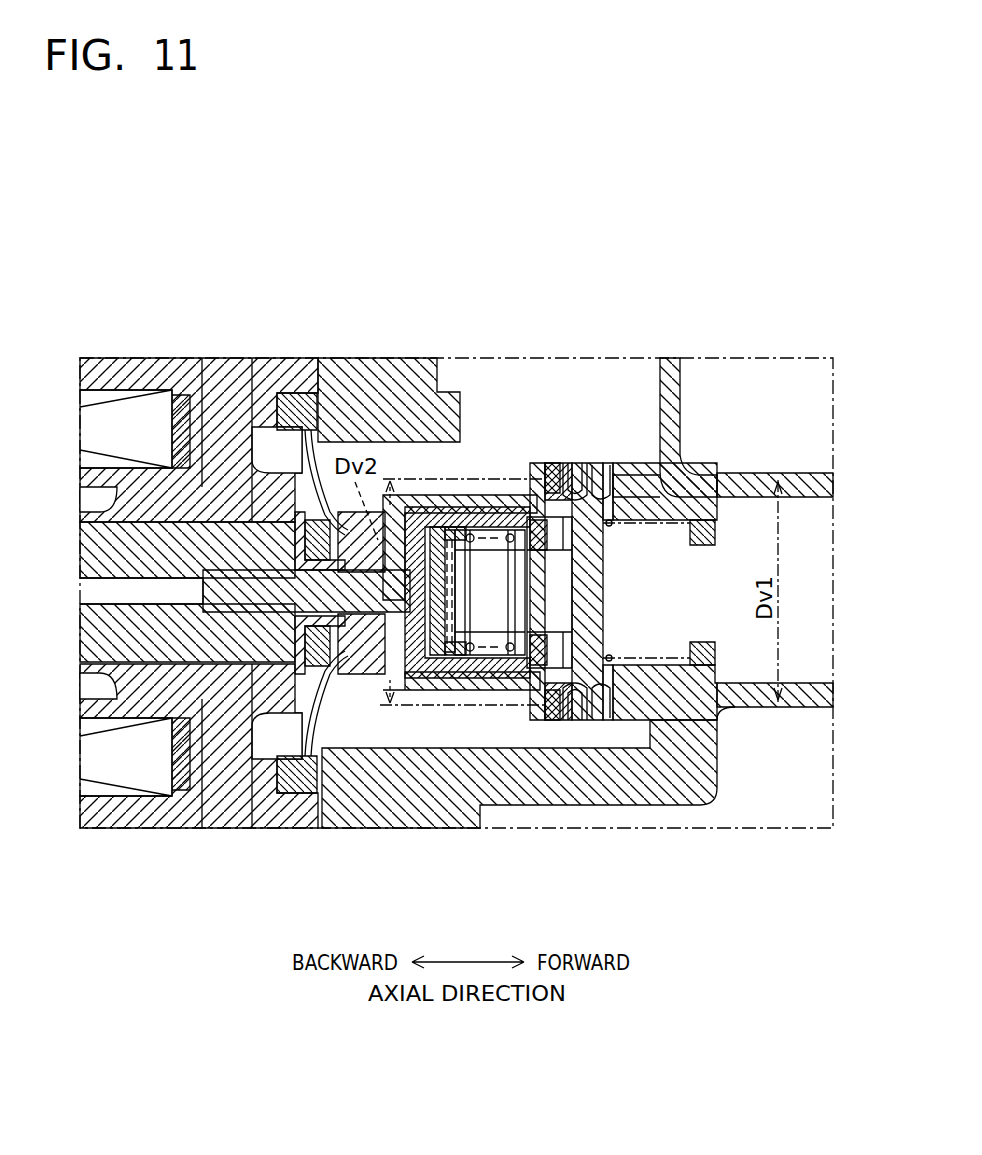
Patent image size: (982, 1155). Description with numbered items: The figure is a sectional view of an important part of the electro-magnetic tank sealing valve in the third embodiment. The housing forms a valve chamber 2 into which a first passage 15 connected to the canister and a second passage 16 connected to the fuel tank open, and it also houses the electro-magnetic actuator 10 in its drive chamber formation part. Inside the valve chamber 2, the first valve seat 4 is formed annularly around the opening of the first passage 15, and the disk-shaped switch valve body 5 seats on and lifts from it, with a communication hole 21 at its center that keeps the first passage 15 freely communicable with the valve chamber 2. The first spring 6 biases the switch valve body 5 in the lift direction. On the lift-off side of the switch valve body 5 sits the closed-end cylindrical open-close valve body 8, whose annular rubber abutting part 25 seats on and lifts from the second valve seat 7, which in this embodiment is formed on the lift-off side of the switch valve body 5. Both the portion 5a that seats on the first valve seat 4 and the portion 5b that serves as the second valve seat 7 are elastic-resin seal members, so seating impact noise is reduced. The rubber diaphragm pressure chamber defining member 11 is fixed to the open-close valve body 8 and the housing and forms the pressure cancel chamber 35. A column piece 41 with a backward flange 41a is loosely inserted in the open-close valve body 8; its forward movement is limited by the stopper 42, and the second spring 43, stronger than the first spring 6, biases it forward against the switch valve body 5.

The valve chamber 2 is at (403, 717).
The first valve seat 4 is at (598, 713).
The switch valve body 5 is at (648, 663).
The seating portion 5a is at (687, 485).
The second valve seat portion 5b is at (567, 707).
The first spring 6 is at (695, 668).
The second valve seat 7 is at (548, 713).
The open-close valve body 8 is at (483, 670).
The electro-magnetic actuator 10 is at (135, 808).
The pressure chamber defining member 11 is at (283, 690).
The first passage 15 is at (808, 581).
The second passage 16 is at (630, 382).
The communication hole 21 is at (603, 585).
The abutting part 25 is at (562, 527).
The pressure cancel chamber 35 is at (232, 700).
The column piece 41 is at (545, 553).
The flange 41a is at (505, 535).
The stopper 42 is at (520, 545).
The second spring 43 is at (462, 528).